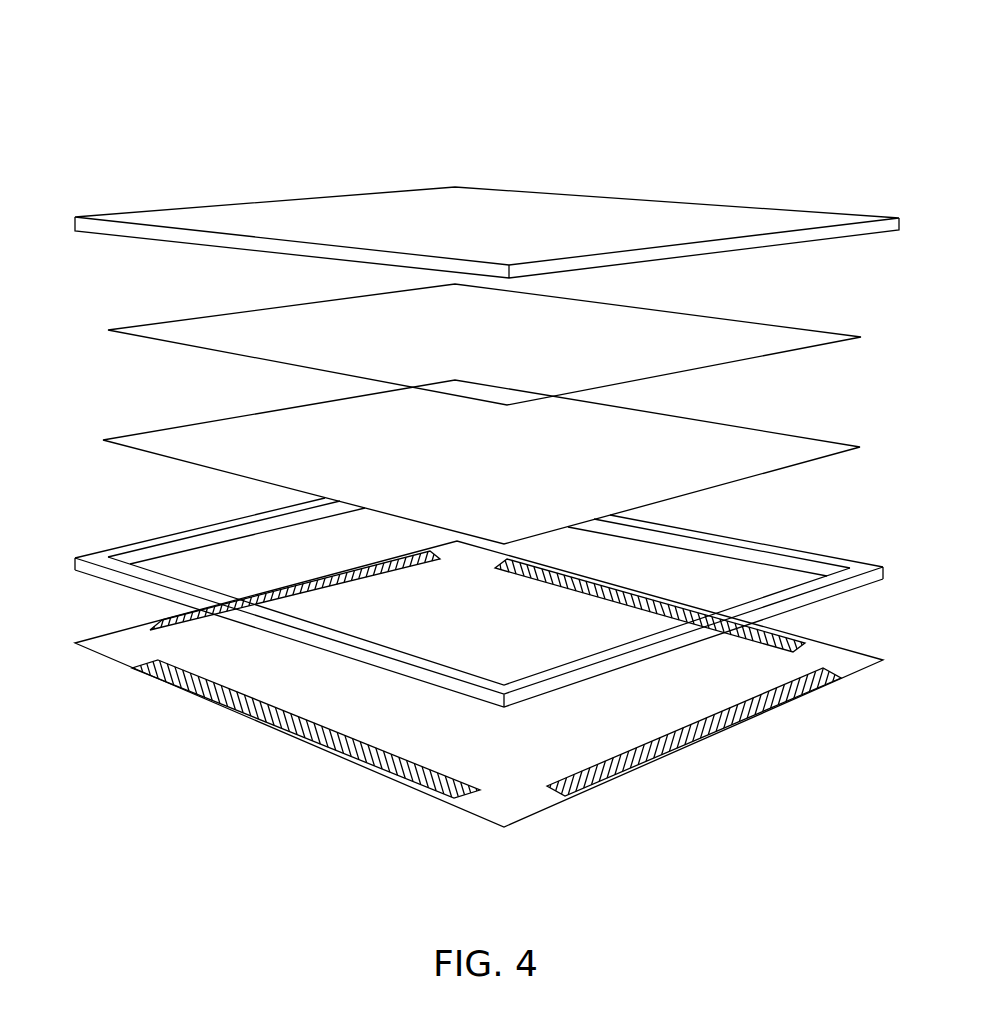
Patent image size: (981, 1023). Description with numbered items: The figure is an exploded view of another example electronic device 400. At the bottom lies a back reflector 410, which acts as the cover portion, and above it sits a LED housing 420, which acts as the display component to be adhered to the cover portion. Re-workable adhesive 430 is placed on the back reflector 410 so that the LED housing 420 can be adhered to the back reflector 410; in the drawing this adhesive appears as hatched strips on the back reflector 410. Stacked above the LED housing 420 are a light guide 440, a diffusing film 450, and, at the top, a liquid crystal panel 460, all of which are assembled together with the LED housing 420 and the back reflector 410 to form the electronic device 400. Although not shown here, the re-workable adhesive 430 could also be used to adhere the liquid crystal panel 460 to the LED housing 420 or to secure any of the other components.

The electronic device 400 is at (160, 68).
The back reflector 410 is at (508, 806).
The LED housing 420 is at (97, 556).
The re-workable adhesive 430 is at (243, 705).
The light guide 440 is at (797, 452).
The diffusing film 450 is at (793, 340).
The liquid crystal panel 460 is at (427, 208).